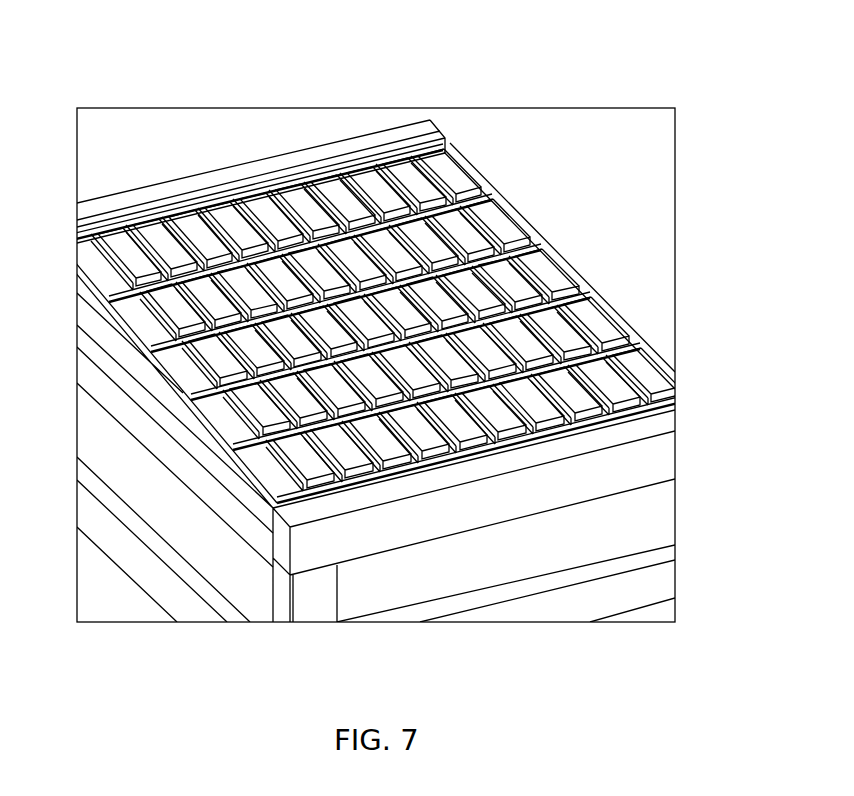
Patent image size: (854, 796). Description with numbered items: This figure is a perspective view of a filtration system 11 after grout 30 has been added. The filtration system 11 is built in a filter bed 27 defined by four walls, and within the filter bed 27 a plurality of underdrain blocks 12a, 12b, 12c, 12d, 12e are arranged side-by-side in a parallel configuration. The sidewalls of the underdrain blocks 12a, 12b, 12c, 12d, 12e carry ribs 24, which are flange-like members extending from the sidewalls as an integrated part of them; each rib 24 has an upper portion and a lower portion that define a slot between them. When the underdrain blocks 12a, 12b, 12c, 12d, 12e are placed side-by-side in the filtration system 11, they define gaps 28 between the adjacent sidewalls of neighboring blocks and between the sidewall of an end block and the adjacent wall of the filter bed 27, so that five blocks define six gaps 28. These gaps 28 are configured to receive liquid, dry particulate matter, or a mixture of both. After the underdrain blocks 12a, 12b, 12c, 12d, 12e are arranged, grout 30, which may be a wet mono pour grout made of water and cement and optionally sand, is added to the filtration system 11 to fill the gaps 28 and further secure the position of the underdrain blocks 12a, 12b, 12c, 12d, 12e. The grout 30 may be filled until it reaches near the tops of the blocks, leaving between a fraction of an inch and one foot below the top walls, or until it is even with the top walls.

The filtration system 11 is at (76, 68).
The underdrain block 12a is at (86, 290).
The underdrain block 12b is at (170, 320).
The underdrain block 12c is at (190, 375).
The underdrain block 12d is at (630, 330).
The underdrain block 12e is at (650, 407).
The rib 24 is at (412, 430).
The filter bed 27 is at (640, 517).
The gap 28 is at (140, 220).
The grout 30 is at (374, 320).